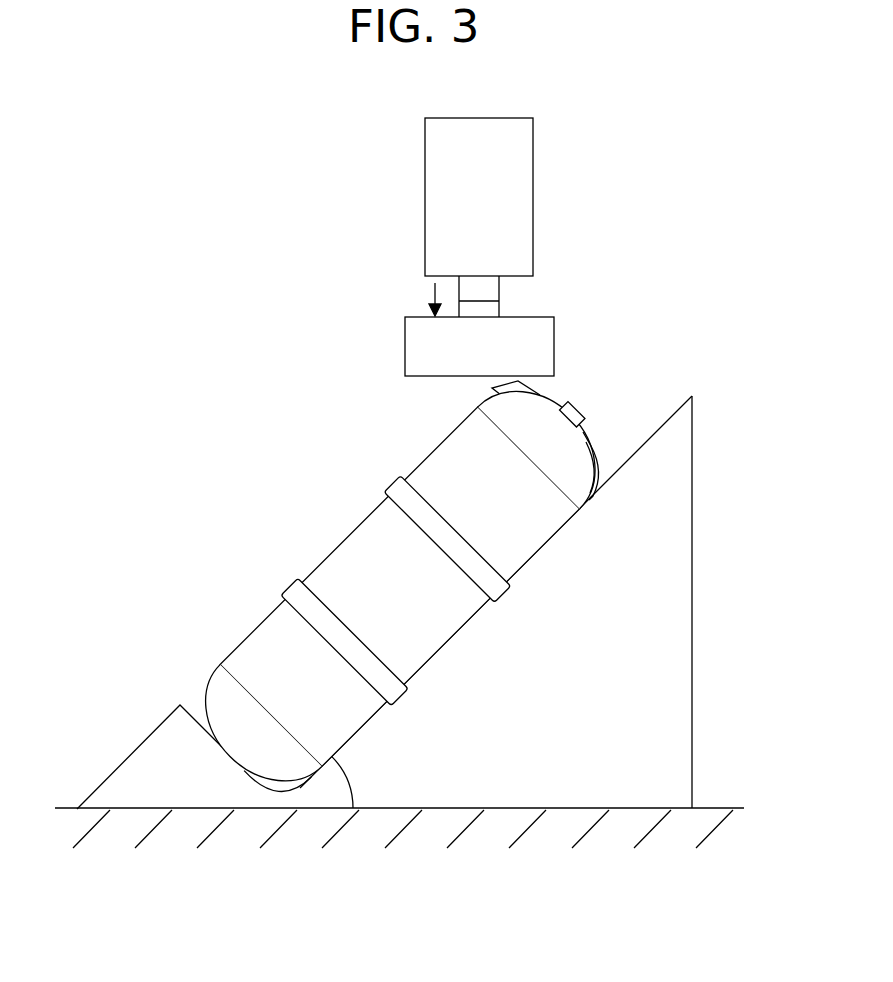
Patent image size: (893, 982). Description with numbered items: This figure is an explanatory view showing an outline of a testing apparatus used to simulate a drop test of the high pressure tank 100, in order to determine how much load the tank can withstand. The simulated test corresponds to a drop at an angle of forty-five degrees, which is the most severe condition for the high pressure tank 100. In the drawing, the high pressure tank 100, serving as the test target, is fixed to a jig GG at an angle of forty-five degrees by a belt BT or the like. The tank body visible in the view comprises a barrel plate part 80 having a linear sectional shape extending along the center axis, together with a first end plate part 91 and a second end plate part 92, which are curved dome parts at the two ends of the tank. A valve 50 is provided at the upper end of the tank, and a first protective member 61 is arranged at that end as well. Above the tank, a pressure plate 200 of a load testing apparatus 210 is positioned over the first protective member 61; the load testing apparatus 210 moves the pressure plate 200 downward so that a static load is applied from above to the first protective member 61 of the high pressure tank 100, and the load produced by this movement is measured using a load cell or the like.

The high pressure tank 100 is at (347, 528).
The barrel plate part 80 is at (253, 627).
The second end plate part 92 is at (213, 697).
The valve 50 is at (578, 402).
The first protective member 61 is at (492, 387).
The first end plate part 91 is at (573, 458).
The belt BT is at (393, 477).
The pressure plate 200 is at (412, 345).
The load testing apparatus 210 is at (440, 208).
The jig GG is at (660, 627).